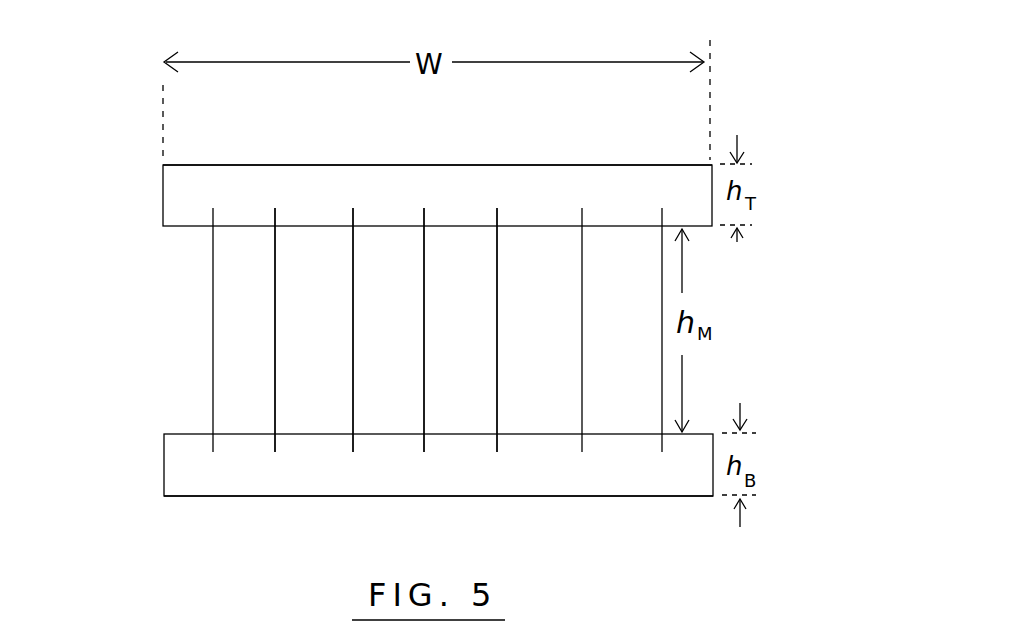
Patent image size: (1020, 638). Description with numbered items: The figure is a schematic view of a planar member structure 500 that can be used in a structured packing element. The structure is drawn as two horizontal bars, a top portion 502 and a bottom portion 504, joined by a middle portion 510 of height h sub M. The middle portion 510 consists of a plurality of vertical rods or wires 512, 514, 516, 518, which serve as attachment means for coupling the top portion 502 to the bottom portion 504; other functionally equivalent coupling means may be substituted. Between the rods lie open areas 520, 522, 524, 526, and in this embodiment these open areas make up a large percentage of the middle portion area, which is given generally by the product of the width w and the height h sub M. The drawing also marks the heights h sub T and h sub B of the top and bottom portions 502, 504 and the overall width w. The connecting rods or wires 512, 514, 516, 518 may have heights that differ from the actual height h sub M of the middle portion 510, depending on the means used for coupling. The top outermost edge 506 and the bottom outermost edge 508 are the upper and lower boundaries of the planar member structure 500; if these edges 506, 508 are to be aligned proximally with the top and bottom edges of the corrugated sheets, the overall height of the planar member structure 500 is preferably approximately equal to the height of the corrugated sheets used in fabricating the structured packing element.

The planar member structure 500 is at (830, 326).
The top portion 502 is at (437, 195).
The bottom portion 504 is at (438, 465).
The top outermost edge 506 is at (315, 165).
The bottom outermost edge 508 is at (283, 497).
The middle portion 510 is at (143, 227).
The rod or wire 512 is at (275, 296).
The rod or wire 514 is at (354, 310).
The rod or wire 516 is at (425, 272).
The rod or wire 518 is at (498, 297).
The open area 520 is at (200, 364).
The open area 522 is at (265, 386).
The open area 524 is at (333, 354).
The open area 526 is at (403, 381).